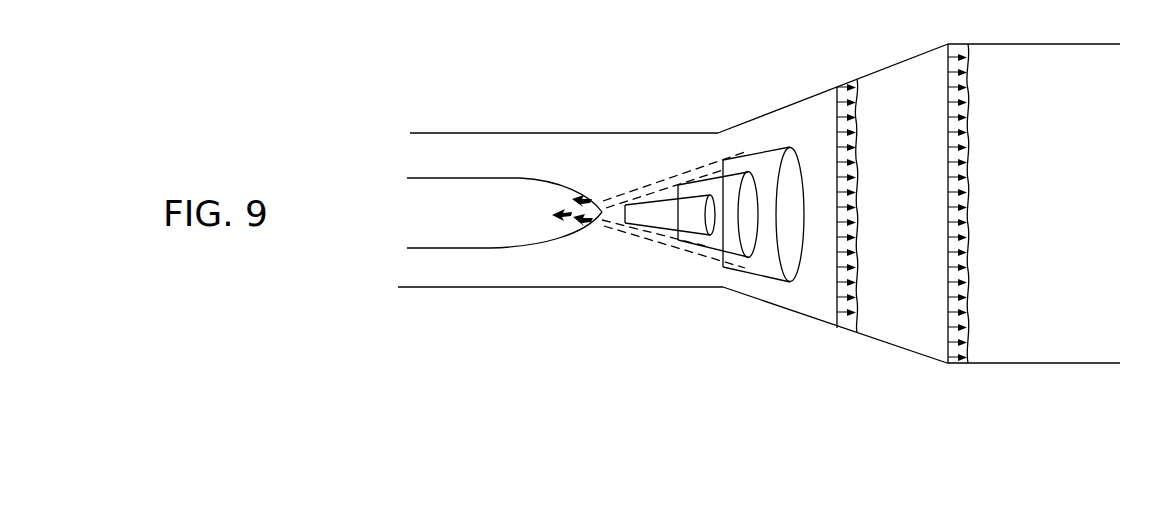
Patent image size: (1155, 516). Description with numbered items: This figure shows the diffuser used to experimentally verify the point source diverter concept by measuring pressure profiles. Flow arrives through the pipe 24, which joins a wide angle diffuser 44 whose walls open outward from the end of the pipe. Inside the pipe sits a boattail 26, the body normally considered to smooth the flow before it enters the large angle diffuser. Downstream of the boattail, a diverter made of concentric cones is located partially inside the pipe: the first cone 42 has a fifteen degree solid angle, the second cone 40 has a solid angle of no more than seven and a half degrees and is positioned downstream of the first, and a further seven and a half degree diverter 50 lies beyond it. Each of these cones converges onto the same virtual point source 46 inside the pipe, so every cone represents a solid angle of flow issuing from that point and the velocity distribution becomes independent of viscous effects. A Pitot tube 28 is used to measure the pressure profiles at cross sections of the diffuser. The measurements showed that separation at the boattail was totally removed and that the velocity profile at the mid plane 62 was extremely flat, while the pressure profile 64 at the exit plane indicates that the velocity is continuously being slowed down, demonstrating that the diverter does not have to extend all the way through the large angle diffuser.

The pipe 24 is at (598, 287).
The boattail 26 is at (456, 249).
The Pitot tube 28 is at (878, 74).
The second cone 40 is at (689, 186).
The first cone 42 is at (643, 205).
The diffuser 44 is at (784, 308).
The point source 46 is at (547, 211).
The seven and a half degree diverter 50 is at (764, 153).
The velocity profile at mid plane 62 is at (866, 322).
The pressure profile 64 is at (977, 345).